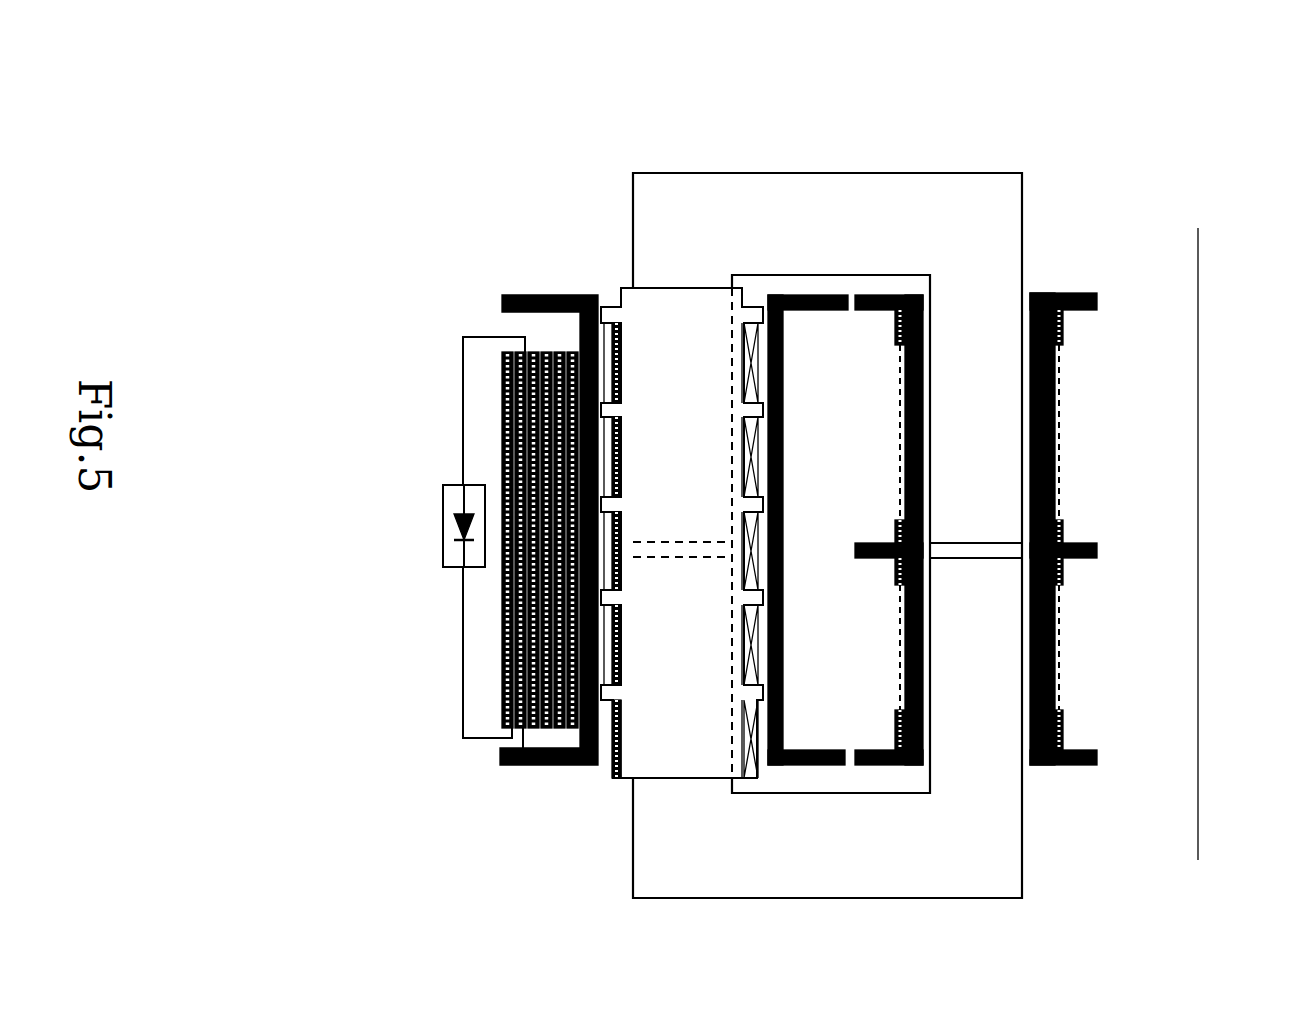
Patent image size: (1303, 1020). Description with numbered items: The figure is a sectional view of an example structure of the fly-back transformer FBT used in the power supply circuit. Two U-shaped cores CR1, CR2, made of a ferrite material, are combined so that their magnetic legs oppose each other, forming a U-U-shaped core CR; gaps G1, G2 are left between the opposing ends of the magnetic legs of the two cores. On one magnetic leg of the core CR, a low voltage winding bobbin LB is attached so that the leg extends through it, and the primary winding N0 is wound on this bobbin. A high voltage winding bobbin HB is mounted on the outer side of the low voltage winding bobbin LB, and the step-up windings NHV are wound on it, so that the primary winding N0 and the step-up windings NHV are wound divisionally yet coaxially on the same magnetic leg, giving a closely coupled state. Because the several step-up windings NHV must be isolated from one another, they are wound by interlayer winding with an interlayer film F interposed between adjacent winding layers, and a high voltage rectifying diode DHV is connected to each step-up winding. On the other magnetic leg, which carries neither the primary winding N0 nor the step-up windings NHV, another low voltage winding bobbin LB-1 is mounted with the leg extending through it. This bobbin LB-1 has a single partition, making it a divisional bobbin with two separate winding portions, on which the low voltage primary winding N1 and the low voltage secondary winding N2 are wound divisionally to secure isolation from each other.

The fly-back transformer FBT is at (637, 153).
The low voltage winding bobbin LB is at (687, 287).
The high voltage winding bobbin HB is at (567, 293).
The low voltage winding bobbin LB-1 is at (863, 312).
The primary winding N0 is at (621, 642).
The low voltage primary winding N1 is at (897, 572).
The low voltage secondary winding N2 is at (897, 345).
The gap G1 is at (977, 551).
The gap G2 is at (690, 542).
The interlayer film F is at (502, 395).
The high voltage rectifying diode DHV is at (443, 538).
The step-up winding NHV is at (523, 768).
The U-shaped core CR1 is at (985, 236).
The U-shaped core CR2 is at (1198, 860).
The U-U-shaped core CR is at (1198, 520).